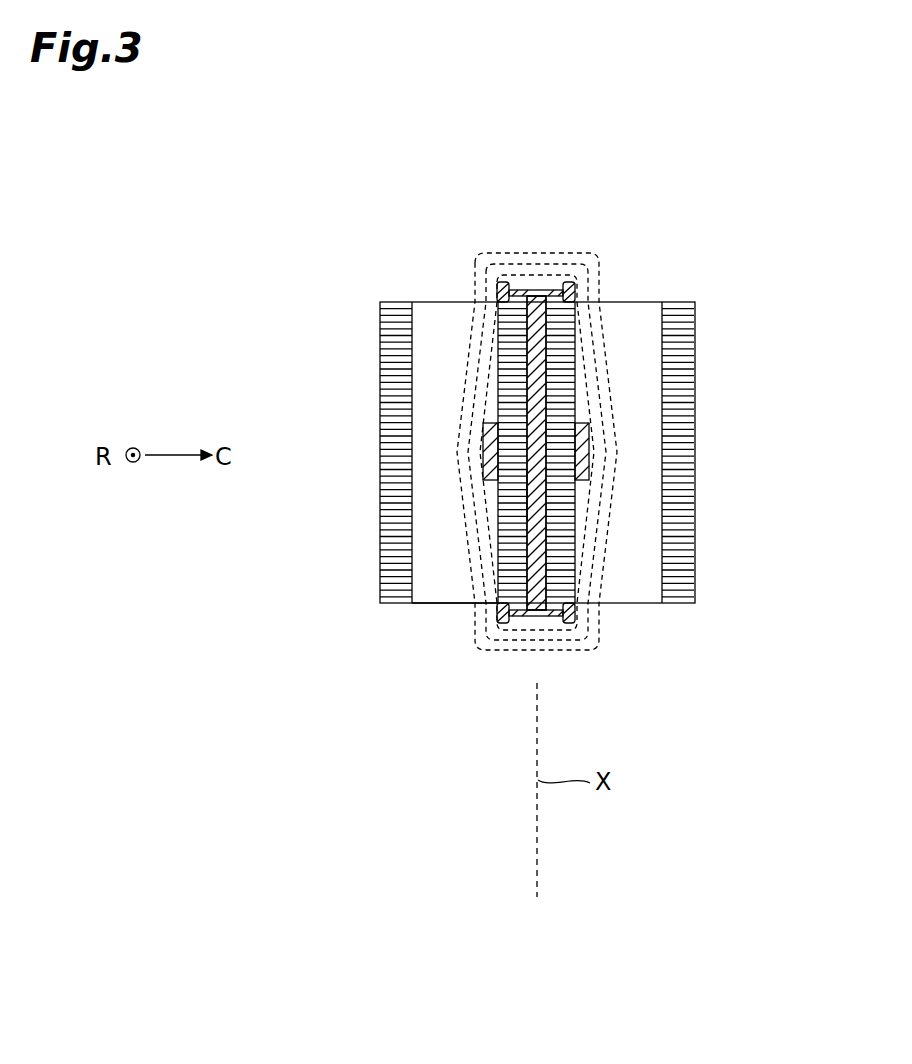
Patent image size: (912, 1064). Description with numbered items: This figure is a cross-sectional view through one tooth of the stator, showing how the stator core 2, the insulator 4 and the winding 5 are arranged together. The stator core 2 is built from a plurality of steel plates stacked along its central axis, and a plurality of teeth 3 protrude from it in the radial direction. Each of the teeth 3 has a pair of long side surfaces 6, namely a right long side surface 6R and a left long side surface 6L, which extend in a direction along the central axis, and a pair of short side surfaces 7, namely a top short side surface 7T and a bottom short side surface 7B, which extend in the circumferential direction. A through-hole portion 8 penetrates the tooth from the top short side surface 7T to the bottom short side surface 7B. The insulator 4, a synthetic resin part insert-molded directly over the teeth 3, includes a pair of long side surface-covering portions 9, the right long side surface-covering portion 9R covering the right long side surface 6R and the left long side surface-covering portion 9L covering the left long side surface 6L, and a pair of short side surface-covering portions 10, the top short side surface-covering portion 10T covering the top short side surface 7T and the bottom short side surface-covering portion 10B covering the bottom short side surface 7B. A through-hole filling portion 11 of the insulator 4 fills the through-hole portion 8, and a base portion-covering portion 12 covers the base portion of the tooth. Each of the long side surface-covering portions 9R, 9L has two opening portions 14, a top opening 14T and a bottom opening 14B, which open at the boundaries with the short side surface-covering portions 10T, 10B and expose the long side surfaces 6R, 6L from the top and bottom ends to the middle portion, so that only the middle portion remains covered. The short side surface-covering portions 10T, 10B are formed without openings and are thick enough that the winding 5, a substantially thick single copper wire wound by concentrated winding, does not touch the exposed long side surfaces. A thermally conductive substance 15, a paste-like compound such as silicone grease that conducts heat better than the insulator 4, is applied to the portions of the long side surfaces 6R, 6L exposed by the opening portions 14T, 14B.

The stator core 2 is at (378, 603).
The teeth 3 is at (497, 418).
The insulator 4 is at (535, 290).
The winding 5 is at (488, 645).
The long side surfaces 6 is at (533, 453).
The left long side surface 6L is at (490, 517).
The right long side surface 6R is at (585, 375).
The short side surfaces 7 is at (582, 461).
The top short side surface 7T is at (548, 292).
The bottom short side surface 7B is at (553, 620).
The through-hole portion 8 is at (528, 497).
The long side surface-covering portions 9 is at (533, 451).
The left long side surface-covering portion 9L is at (490, 453).
The right long side surface-covering portion 9R is at (582, 452).
The short side surface-covering portions 10 is at (487, 471).
The top short side surface-covering portion 10T is at (523, 292).
The bottom short side surface-covering portion 10B is at (530, 613).
The through-hole filling portion 11 is at (572, 498).
The base portion-covering portion 12 is at (423, 603).
The opening portions 14 is at (533, 475).
The top opening 14T is at (497, 302).
The bottom opening 14B is at (482, 625).
The thermally conductive substance 15 is at (495, 372).